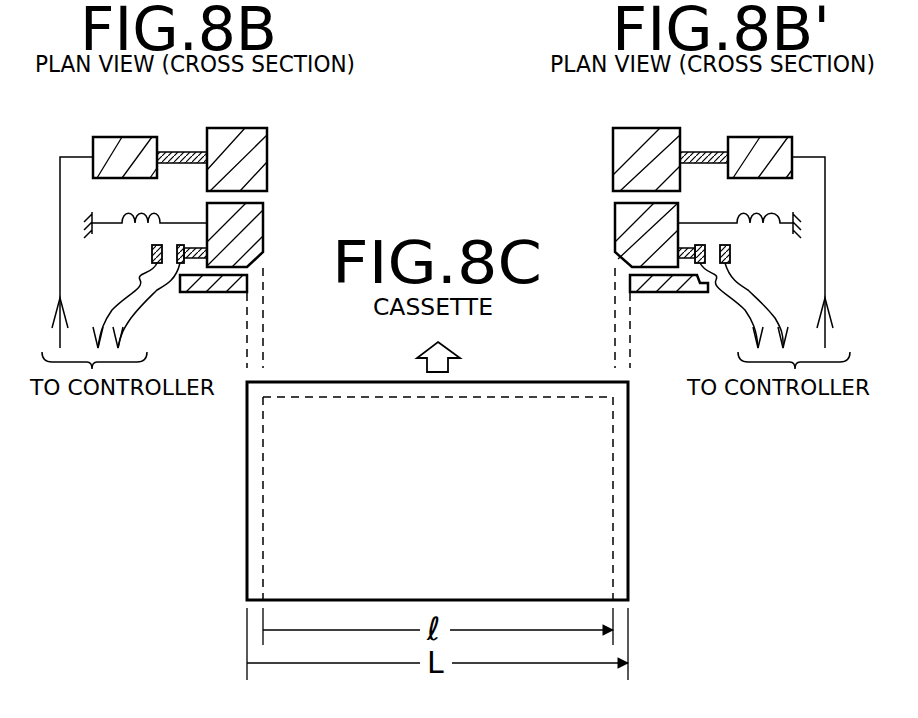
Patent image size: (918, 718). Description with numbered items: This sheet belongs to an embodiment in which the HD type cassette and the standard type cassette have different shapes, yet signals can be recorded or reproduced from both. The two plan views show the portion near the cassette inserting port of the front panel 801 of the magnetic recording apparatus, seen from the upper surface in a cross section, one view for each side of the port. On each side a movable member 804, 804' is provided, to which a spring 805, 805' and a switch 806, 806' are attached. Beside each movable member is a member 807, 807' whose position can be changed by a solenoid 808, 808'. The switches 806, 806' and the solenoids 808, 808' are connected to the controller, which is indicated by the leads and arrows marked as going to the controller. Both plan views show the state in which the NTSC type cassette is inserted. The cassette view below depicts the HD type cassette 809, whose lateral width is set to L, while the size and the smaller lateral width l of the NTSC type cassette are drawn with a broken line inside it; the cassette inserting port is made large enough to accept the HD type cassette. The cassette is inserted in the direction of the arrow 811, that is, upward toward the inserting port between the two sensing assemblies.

In FIG. 8B, the front panel 801 is at (195, 292).
In FIG. 8B', the front panel 801 is at (668, 292).
In FIG. 8B, the movable member 804 is at (286, 228).
In FIG. 8B, the spring 805 is at (137, 246).
In FIG. 8B, the switch 806 is at (150, 262).
In FIG. 8B, the member 807 is at (243, 132).
In FIG. 8B, the solenoid 808 is at (130, 126).
In FIG. 8B', the movable member 804' is at (598, 228).
In FIG. 8B', the spring 805' is at (745, 246).
In FIG. 8B', the switch 806' is at (733, 262).
In FIG. 8B', the member 807' is at (650, 132).
In FIG. 8B', the solenoid 808' is at (762, 126).
In FIG. 8C, the HD type cassette 809 is at (629, 532).
In FIG. 8C, the arrow 811 is at (460, 362).